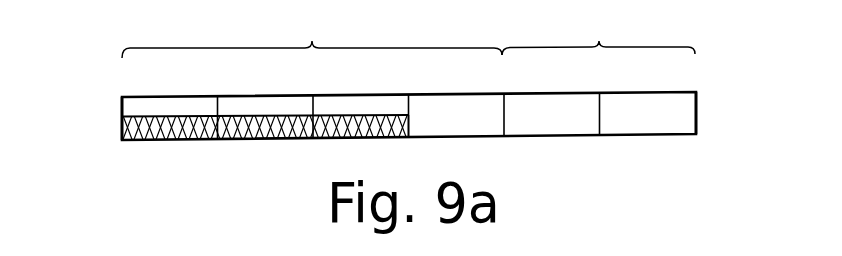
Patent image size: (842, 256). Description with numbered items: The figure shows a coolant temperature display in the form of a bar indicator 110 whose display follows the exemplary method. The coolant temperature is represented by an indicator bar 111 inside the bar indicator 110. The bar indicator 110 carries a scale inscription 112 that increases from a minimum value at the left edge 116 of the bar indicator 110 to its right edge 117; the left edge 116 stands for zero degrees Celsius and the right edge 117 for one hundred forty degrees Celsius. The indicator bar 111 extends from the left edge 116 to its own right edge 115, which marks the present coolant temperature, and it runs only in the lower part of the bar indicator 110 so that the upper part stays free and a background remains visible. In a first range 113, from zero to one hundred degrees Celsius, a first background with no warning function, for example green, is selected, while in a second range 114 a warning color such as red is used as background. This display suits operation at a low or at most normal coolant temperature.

The bar indicator 110 is at (722, 72).
The indicator bar 111 is at (280, 140).
The scale inscription 112 is at (120, 72).
The first range 113 is at (312, 34).
The second range 114 is at (598, 33).
The right edge of indicator bar 115 is at (409, 128).
The left edge of bar indicator 116 is at (122, 107).
The right edge of bar indicator 117 is at (697, 127).